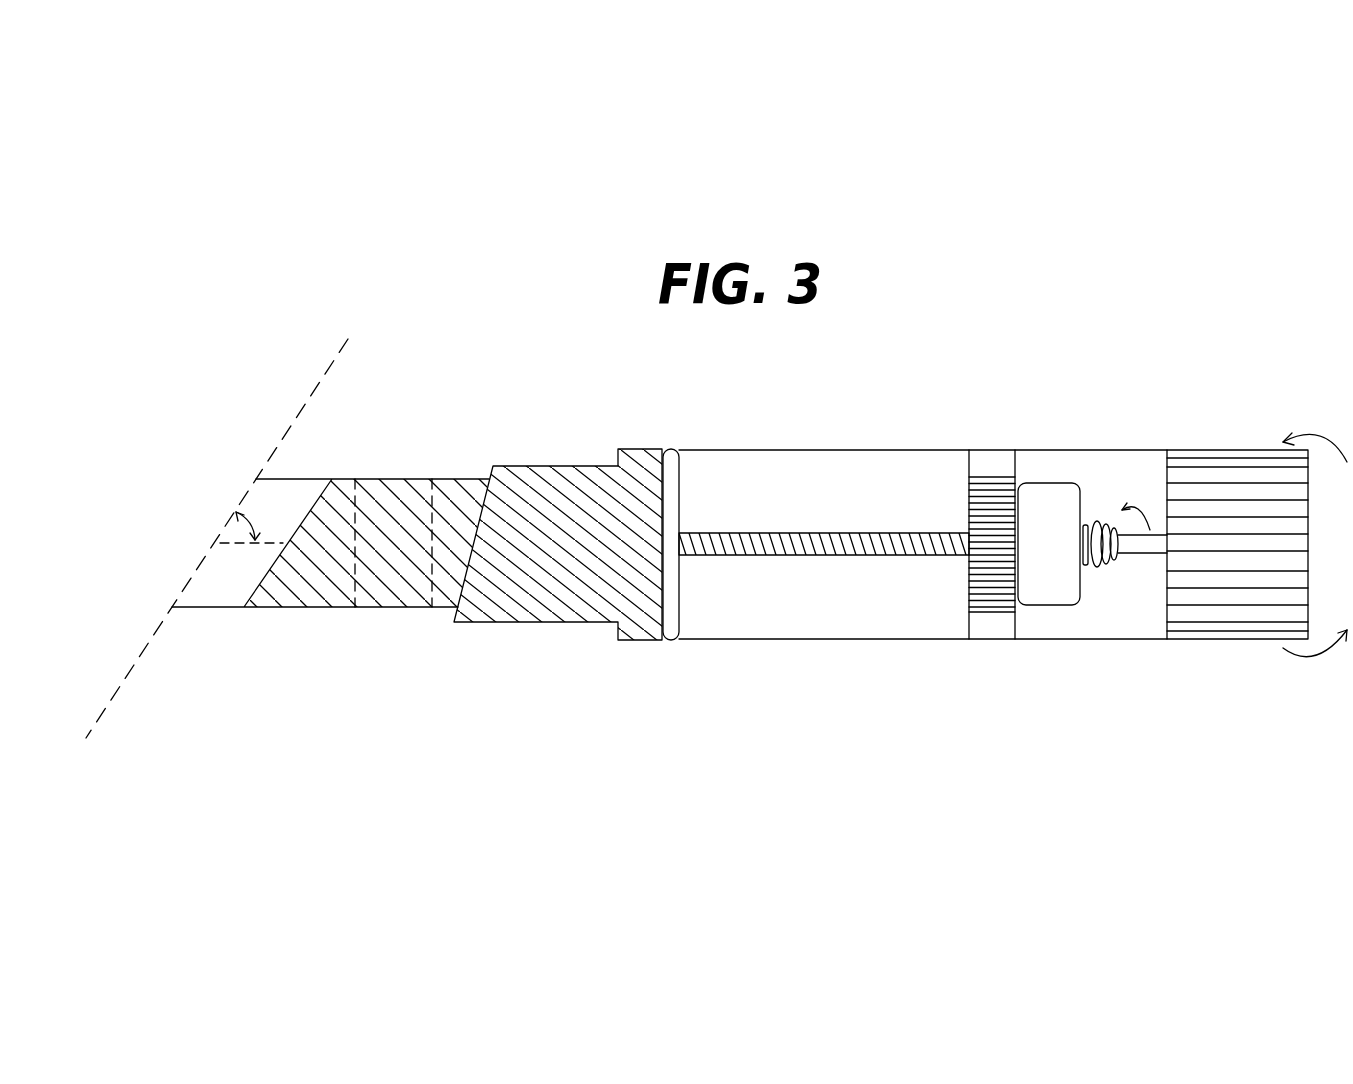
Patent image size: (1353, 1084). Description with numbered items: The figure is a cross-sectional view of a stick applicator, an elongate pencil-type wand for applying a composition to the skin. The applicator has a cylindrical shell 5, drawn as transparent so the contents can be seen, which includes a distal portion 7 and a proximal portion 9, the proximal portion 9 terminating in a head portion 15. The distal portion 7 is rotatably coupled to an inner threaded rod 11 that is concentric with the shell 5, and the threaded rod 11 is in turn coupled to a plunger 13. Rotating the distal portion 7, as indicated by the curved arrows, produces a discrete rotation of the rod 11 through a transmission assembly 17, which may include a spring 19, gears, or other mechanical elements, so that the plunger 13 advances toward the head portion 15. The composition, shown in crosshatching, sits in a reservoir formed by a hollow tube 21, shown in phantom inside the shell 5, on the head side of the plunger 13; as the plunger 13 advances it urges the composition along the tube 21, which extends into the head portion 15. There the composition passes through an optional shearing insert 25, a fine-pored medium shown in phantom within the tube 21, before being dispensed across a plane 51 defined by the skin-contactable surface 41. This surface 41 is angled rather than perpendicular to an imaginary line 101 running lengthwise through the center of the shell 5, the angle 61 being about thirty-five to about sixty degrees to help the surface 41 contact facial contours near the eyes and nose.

The cylindrical shell 5 is at (1005, 612).
The distal portion 7 is at (1230, 640).
The proximal portion 9 is at (830, 639).
The threaded rod 11 is at (857, 532).
The plunger 13 is at (670, 449).
The head portion 15 is at (537, 688).
The transmission assembly 17 is at (1052, 483).
The spring 19 is at (1102, 563).
The hollow tube 21 is at (537, 466).
The shearing insert 25 is at (390, 580).
The skin-contactable surface 41 is at (232, 518).
The plane 51 is at (327, 368).
The angle 61 is at (250, 526).
The imaginary line 101 is at (230, 546).